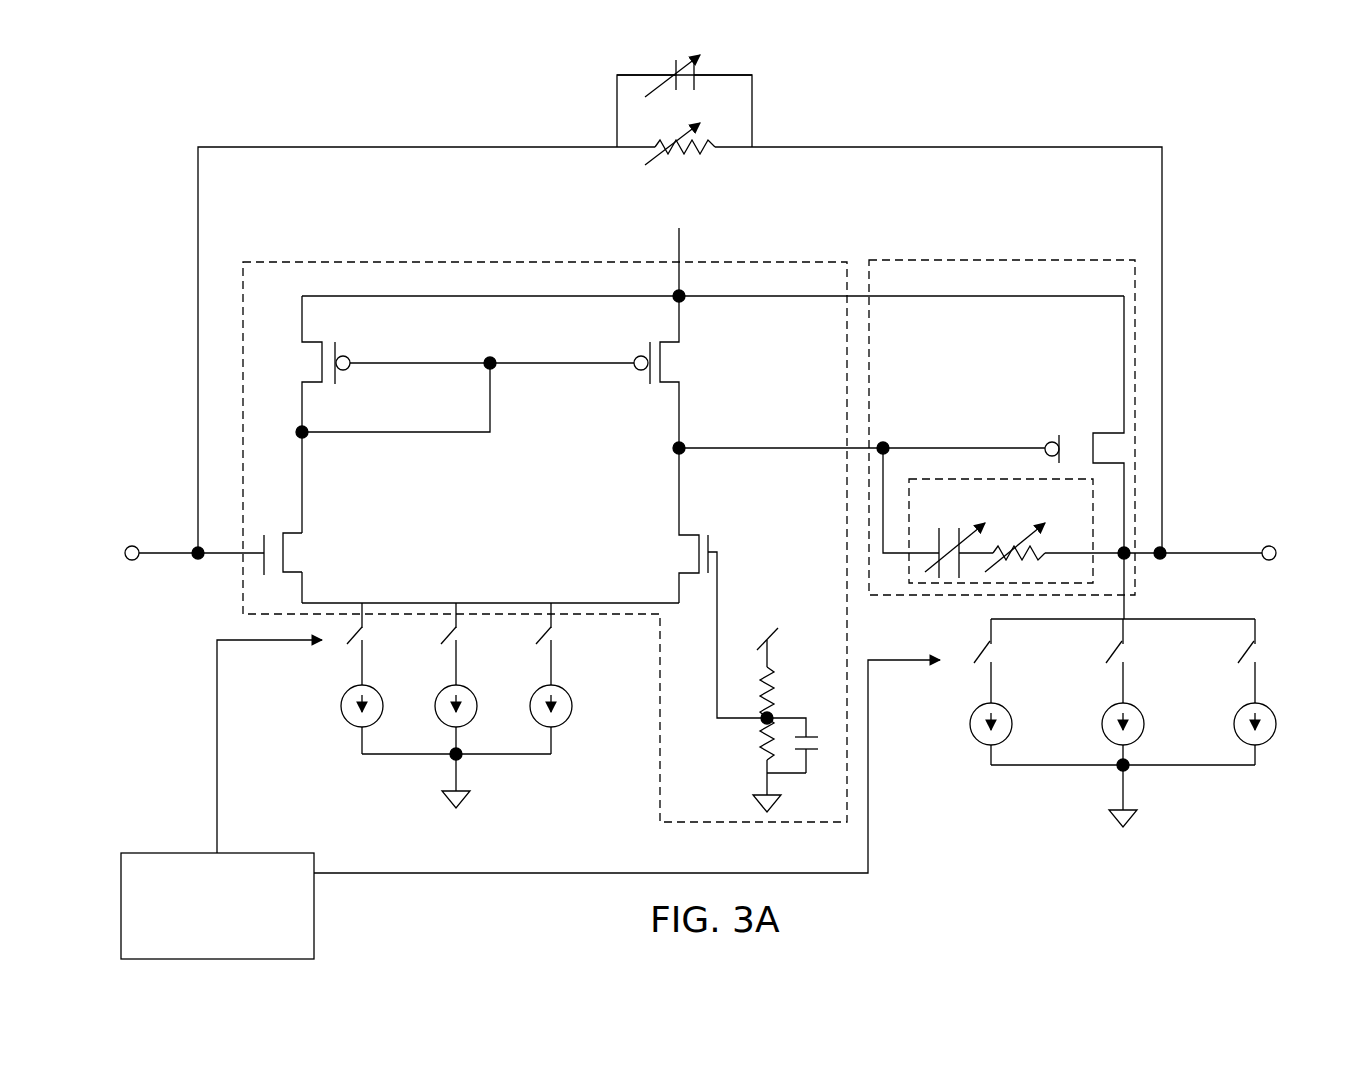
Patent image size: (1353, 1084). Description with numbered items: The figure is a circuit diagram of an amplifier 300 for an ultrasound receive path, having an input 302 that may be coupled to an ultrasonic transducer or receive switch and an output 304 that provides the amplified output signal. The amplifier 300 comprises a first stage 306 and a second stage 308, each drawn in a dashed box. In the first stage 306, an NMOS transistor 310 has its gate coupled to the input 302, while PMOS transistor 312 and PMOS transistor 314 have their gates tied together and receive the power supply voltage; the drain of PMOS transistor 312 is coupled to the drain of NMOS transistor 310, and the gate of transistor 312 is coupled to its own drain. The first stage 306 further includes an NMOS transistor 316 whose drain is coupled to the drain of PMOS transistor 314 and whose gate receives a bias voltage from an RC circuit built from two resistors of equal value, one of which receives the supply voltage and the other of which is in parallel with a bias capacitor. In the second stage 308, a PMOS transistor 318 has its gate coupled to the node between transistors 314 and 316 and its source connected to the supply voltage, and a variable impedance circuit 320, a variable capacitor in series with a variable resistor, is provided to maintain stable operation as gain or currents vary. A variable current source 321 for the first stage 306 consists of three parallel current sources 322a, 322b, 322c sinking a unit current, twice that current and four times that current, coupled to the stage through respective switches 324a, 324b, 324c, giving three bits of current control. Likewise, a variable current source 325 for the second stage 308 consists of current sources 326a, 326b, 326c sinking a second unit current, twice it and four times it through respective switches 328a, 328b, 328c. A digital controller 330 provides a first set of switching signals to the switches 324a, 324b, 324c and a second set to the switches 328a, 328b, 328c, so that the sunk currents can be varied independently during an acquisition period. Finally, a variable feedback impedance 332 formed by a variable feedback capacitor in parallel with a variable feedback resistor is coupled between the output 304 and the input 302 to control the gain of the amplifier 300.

The amplifier 300 is at (230, 140).
The input 302 is at (125, 551).
The output 304 is at (1278, 550).
The first stage 306 is at (563, 512).
The second stage 308 is at (907, 425).
The NMOS transistor 310 is at (305, 558).
The PMOS transistor 312 is at (337, 350).
The PMOS transistor 314 is at (648, 350).
The NMOS transistor 316 is at (703, 535).
The PMOS transistor 318 is at (1078, 432).
The variable impedance circuit 320 is at (918, 585).
The variable current source 321 is at (478, 713).
The current source 322a is at (378, 691).
The current source 322b is at (472, 691).
The current source 322c is at (567, 691).
The switch 324a is at (365, 636).
The switch 324b is at (459, 636).
The switch 324c is at (554, 636).
The variable current source 325 is at (1146, 699).
The current source 326a is at (1007, 706).
The current source 326b is at (1139, 706).
The current source 326c is at (1271, 706).
The switch 328a is at (993, 650).
The switch 328b is at (1125, 650).
The switch 328c is at (1257, 650).
The digital controller 330 is at (165, 852).
The variable feedback impedance 332 is at (835, 113).